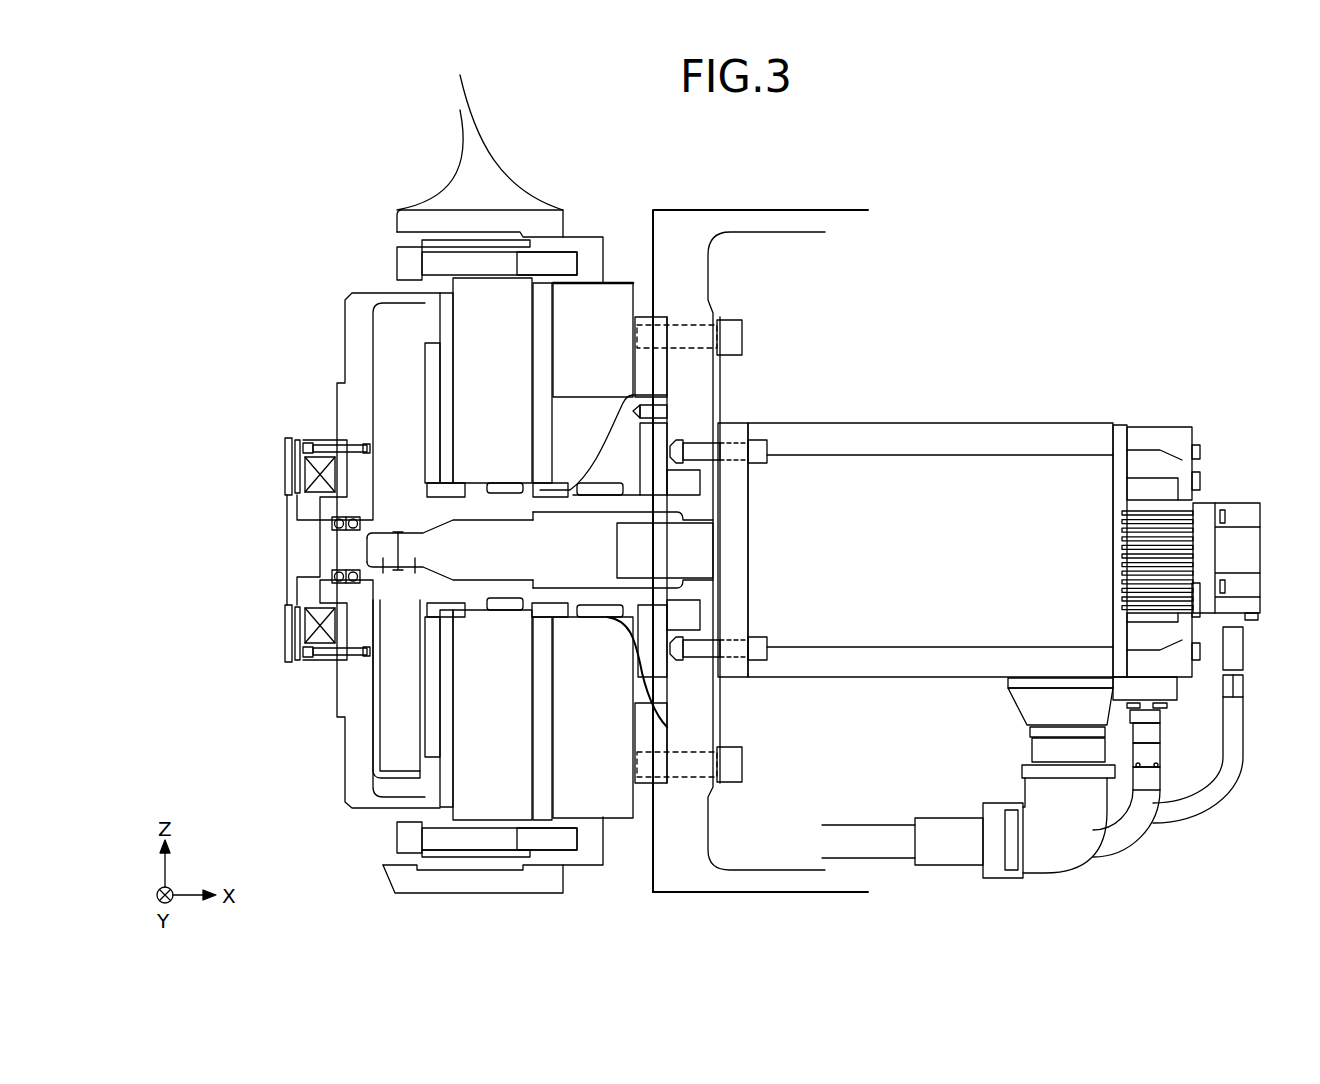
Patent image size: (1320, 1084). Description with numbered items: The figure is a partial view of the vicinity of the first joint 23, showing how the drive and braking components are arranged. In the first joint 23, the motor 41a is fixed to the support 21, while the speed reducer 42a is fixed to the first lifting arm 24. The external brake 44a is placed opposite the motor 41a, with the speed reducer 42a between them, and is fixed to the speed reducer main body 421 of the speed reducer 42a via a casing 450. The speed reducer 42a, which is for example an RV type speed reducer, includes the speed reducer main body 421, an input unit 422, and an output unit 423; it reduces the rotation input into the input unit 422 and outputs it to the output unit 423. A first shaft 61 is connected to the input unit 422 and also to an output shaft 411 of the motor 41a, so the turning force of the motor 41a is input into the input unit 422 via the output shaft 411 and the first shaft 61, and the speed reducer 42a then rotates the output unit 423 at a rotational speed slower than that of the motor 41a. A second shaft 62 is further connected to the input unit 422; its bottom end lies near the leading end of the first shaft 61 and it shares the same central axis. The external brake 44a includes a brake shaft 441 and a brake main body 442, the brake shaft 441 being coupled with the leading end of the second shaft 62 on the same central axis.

The support 21 is at (752, 207).
The first joint 23 is at (1157, 273).
The first lifting arm 24 is at (488, 893).
The motor 41a is at (967, 426).
The output shaft 411 is at (687, 552).
The speed reducer 42a is at (398, 338).
The speed reducer main body 421 is at (463, 415).
The input unit 422 is at (385, 750).
The output unit 423 is at (652, 376).
The external brake 44a is at (217, 453).
The brake shaft 441 is at (303, 555).
The brake main body 442 is at (287, 470).
The casing 450 is at (353, 803).
The first shaft 61 is at (398, 572).
The second shaft 62 is at (295, 593).